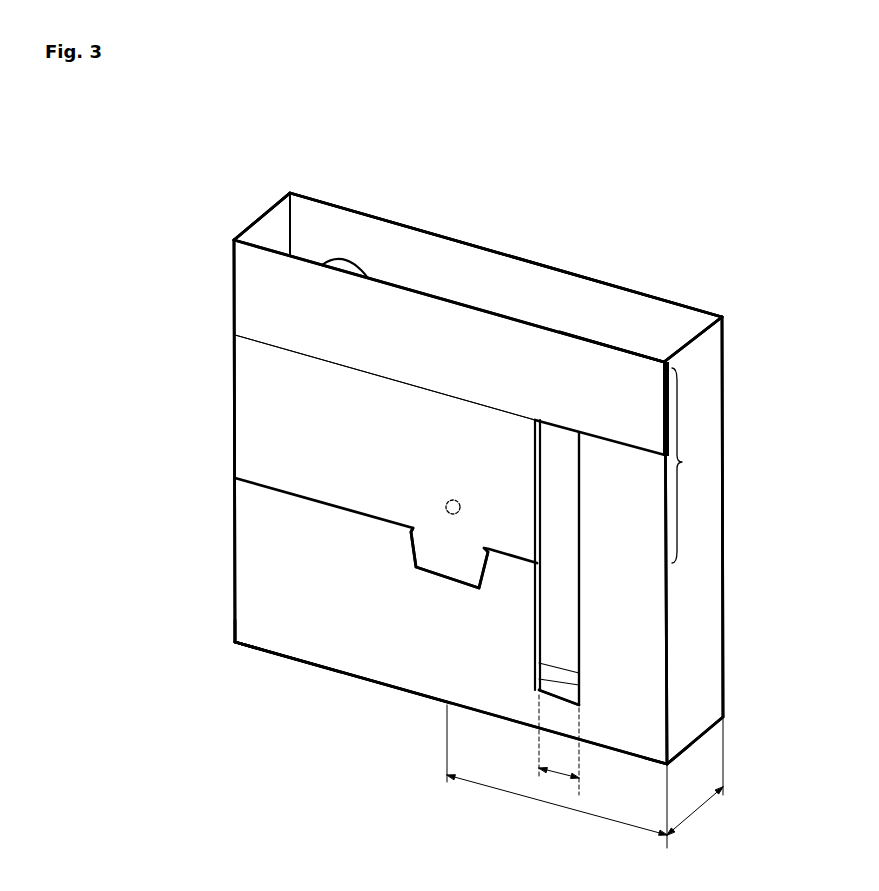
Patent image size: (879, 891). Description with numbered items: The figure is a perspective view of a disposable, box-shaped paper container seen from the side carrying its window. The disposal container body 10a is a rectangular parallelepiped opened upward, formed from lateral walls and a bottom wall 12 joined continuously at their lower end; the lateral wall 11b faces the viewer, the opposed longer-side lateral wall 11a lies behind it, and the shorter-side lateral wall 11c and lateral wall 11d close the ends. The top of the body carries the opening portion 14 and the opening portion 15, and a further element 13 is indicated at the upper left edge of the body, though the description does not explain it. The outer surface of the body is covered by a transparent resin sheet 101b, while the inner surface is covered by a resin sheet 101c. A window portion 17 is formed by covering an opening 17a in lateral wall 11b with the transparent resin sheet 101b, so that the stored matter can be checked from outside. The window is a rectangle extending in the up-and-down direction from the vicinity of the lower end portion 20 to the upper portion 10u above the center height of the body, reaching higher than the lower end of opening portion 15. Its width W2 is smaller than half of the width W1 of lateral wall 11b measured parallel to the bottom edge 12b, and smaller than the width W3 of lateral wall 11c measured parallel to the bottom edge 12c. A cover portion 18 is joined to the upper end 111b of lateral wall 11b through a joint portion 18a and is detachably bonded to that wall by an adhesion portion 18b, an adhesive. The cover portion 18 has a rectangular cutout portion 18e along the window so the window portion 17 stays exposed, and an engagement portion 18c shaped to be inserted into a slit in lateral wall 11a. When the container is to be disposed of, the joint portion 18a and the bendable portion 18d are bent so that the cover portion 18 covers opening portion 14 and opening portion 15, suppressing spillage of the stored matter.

The disposal container body 10a is at (492, 240).
The upper portion 10u is at (694, 465).
The resin sheet 101c is at (620, 302).
The upper end 111b is at (645, 355).
The lateral wall 11a is at (723, 510).
The lateral wall 11b is at (436, 650).
The lateral wall 11c is at (700, 604).
The lateral wall 11d is at (234, 577).
The bottom wall 12 is at (565, 692).
The bottom edge 12b is at (245, 645).
The bottom edge 12c is at (677, 757).
The top left edge 13 is at (275, 205).
The opening portion 14 is at (390, 240).
The opening portion 15 is at (343, 262).
The window portion 17 is at (562, 583).
The opening 17a is at (584, 530).
The cover portion 18 is at (318, 437).
The joint portion 18a is at (278, 252).
The adhesion portion 18b is at (459, 513).
The engagement portion 18c is at (432, 565).
The bendable portion 18d is at (292, 352).
The cutout portion 18e is at (594, 440).
The lower end portion 20 is at (283, 658).
The resin sheet 101b is at (333, 643).
The width W1 is at (557, 776).
The width W2 is at (559, 748).
The width W3 is at (695, 776).